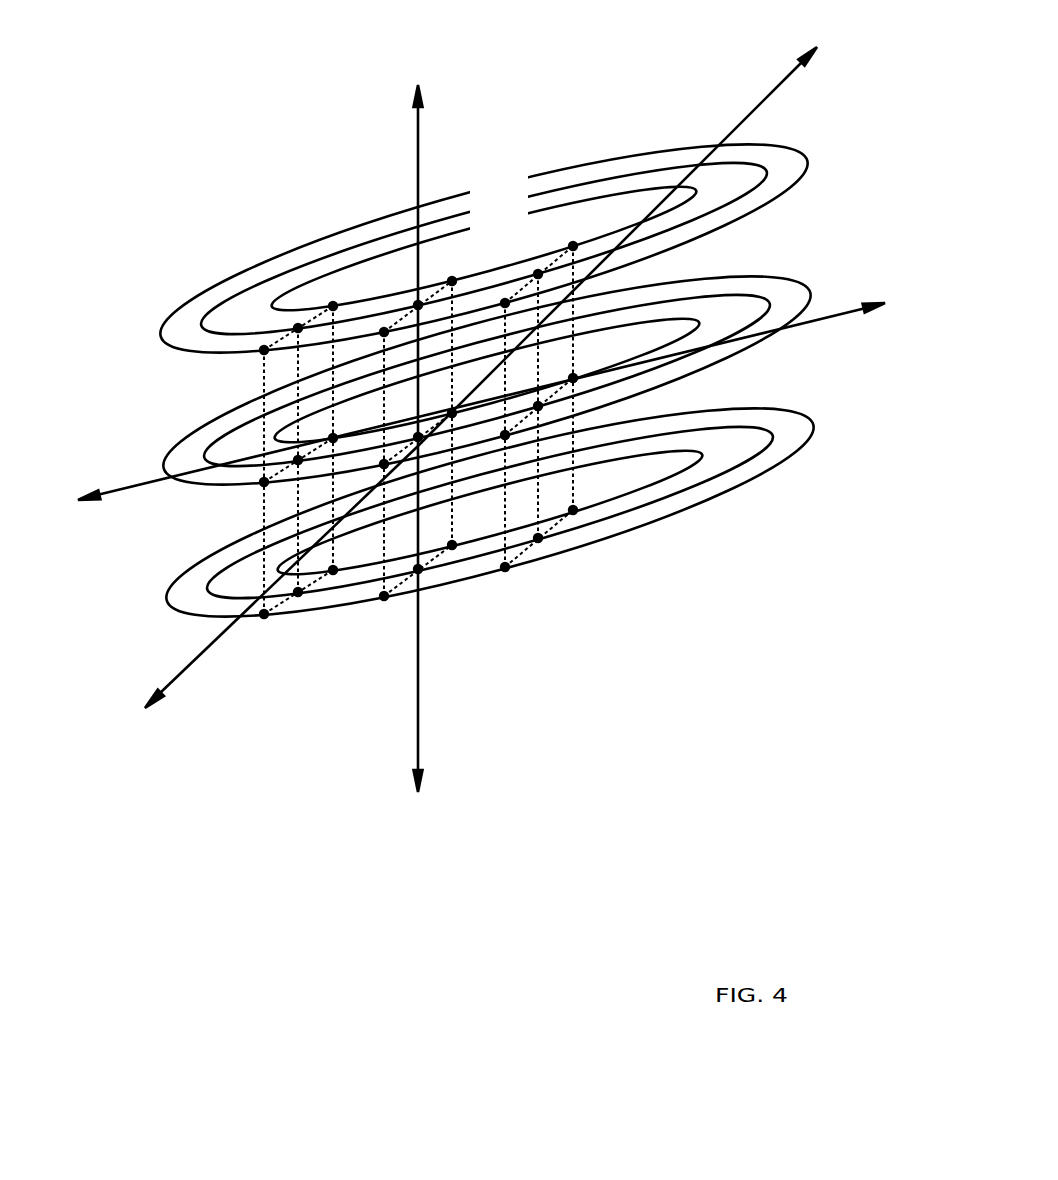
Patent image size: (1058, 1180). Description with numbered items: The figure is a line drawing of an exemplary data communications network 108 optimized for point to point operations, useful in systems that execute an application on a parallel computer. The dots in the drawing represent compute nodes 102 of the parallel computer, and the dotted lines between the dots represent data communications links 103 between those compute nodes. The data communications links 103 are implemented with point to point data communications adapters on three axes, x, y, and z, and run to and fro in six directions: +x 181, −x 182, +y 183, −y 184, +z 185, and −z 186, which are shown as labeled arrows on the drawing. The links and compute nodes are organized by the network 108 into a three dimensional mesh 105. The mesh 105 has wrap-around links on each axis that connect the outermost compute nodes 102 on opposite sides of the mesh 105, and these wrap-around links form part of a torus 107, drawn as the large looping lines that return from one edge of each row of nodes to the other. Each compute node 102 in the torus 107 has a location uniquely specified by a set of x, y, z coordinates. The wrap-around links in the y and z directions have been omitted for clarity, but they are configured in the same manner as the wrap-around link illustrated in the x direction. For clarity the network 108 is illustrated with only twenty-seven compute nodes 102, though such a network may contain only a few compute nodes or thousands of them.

The compute nodes 102 is at (573, 510).
The data communications links 103 is at (264, 512).
The three dimensional mesh 105 is at (573, 247).
The torus 107 is at (245, 252).
The data communications network 108 is at (470, 572).
The +x direction 181 is at (922, 334).
The −x direction 182 is at (75, 541).
The +y direction 183 is at (860, 74).
The −y direction 184 is at (140, 759).
The +z direction 185 is at (435, 74).
The −z direction 186 is at (437, 852).